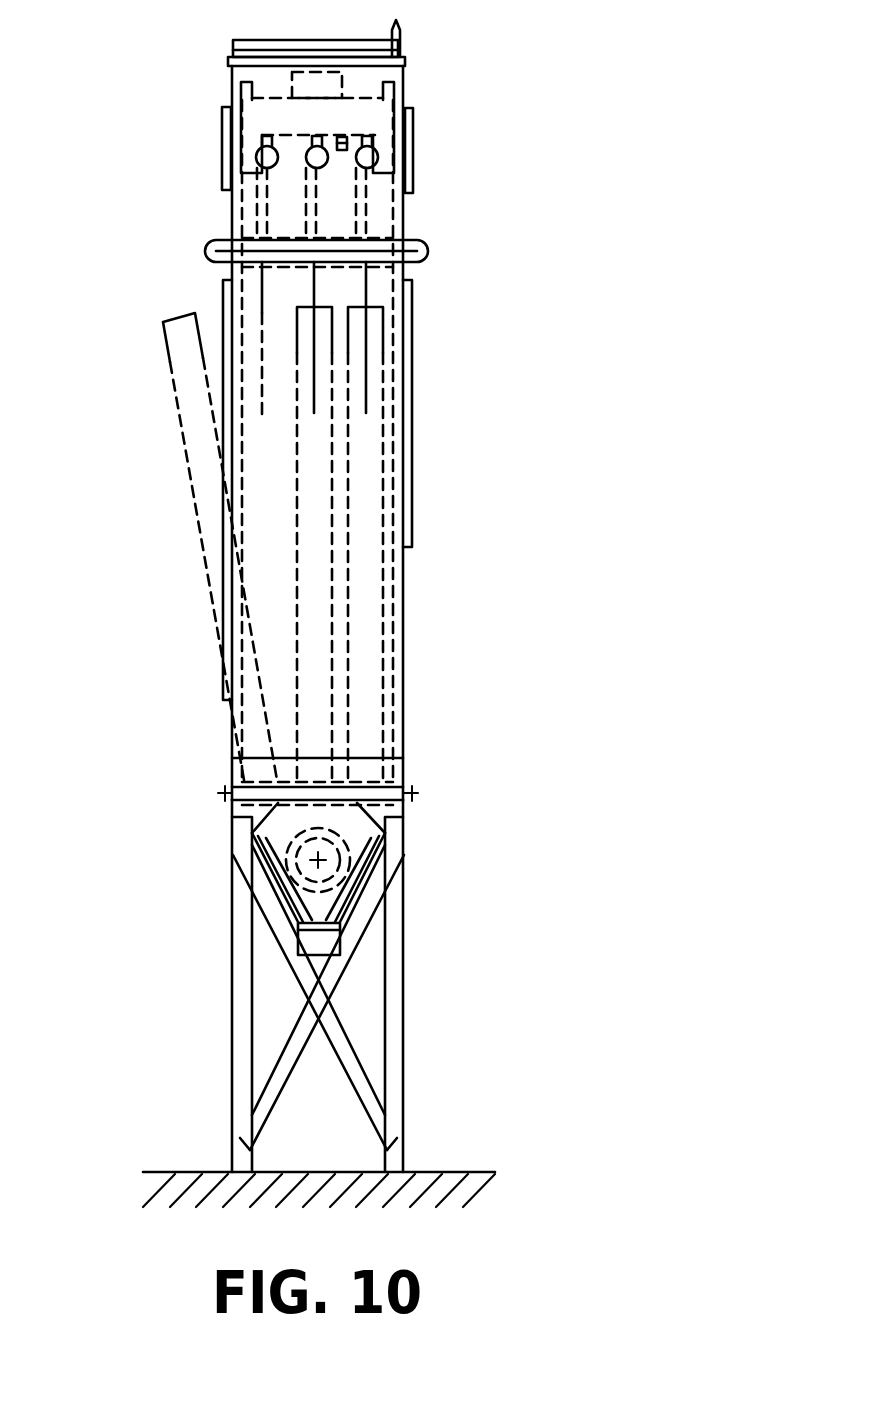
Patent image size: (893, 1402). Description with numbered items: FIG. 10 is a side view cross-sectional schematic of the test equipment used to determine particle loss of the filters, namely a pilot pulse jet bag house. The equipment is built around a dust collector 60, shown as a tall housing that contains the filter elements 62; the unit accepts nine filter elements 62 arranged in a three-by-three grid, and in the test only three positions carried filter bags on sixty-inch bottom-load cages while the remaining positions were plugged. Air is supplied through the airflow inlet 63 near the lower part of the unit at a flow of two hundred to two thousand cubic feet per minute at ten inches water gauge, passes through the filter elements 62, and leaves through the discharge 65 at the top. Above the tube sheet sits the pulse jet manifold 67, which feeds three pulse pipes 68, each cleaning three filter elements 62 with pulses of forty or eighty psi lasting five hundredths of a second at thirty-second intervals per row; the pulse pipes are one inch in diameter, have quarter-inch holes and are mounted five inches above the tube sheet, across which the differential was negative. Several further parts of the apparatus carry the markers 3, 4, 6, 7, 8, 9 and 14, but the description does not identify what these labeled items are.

The cross brace 3 is at (282, 957).
The hopper 4 is at (253, 838).
The support leg 6 is at (302, 1025).
The leg member 7 is at (408, 825).
The leg member 8 is at (453, 954).
The leg member 9 is at (469, 939).
The flange 14 is at (217, 240).
The dust collector 60 is at (272, 453).
The filter elements 62 is at (315, 730).
The airflow inlet 63 is at (428, 884).
The discharge 65 is at (412, 130).
The pulse jet manifold 67 is at (458, 172).
The pulse pipes 68 is at (315, 290).